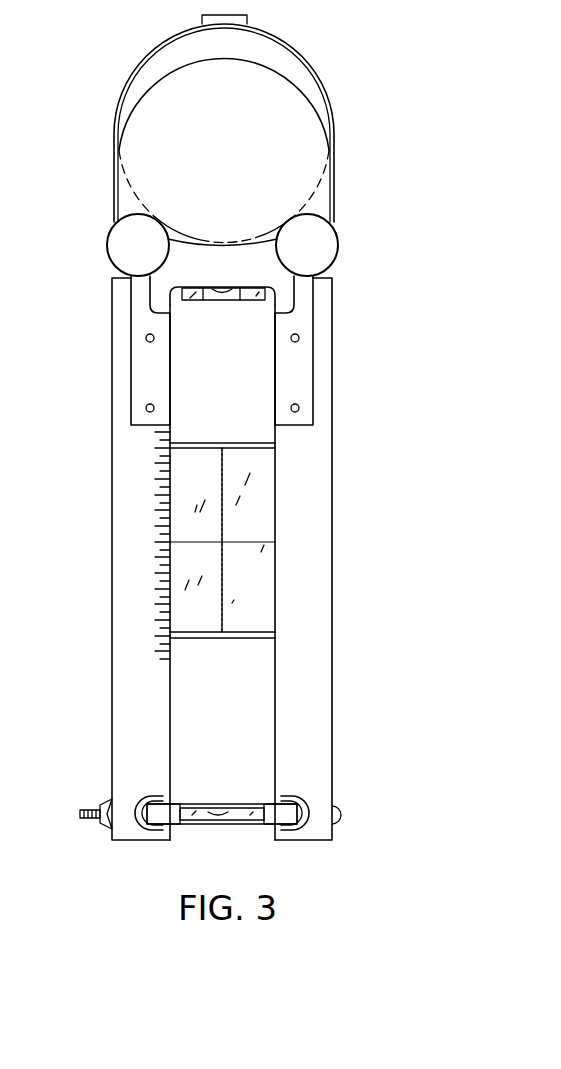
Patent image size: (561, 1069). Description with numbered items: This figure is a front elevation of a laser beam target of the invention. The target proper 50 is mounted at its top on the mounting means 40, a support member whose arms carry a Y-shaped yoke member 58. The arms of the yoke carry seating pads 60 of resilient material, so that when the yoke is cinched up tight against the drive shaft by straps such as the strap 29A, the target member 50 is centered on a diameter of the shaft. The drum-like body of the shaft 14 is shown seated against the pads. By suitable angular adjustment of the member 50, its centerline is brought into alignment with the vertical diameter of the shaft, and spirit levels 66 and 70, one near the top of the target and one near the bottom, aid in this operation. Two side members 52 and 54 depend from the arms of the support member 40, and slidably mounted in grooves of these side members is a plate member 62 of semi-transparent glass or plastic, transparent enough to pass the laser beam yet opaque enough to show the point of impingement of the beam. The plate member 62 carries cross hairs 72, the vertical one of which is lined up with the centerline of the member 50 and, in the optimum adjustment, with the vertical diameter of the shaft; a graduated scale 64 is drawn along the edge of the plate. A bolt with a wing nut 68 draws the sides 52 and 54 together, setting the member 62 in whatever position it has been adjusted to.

The straps 29A is at (302, 54).
The drum 14 is at (276, 130).
The seating pads 60 is at (109, 237).
The Y-shaped yoke member 58 is at (222, 262).
The mounting means 40 is at (104, 271).
The target proper 50 is at (212, 558).
The side member 52 is at (112, 523).
The side member 54 is at (333, 532).
The plate member 62 is at (192, 572).
The spirit level 70 is at (233, 300).
The graduated scale 64 is at (152, 642).
The cross hairs 72 is at (223, 541).
The spirit level 66 is at (235, 820).
The bolt with wing nut 68 is at (102, 822).